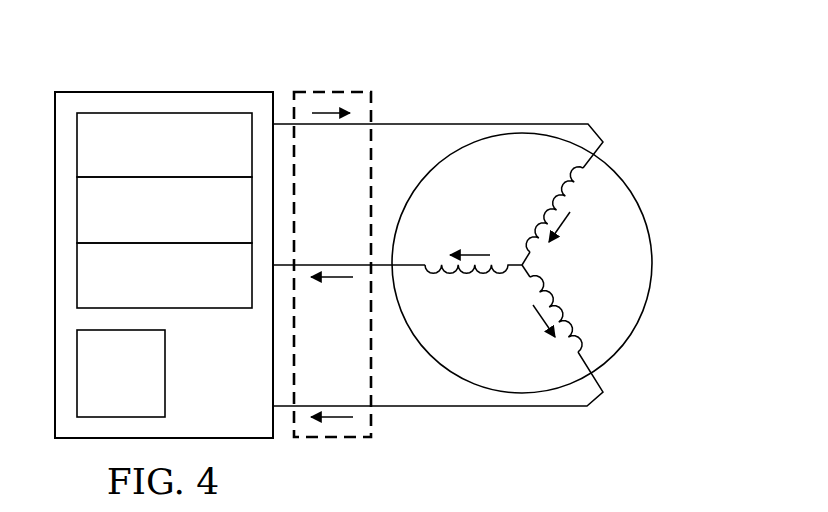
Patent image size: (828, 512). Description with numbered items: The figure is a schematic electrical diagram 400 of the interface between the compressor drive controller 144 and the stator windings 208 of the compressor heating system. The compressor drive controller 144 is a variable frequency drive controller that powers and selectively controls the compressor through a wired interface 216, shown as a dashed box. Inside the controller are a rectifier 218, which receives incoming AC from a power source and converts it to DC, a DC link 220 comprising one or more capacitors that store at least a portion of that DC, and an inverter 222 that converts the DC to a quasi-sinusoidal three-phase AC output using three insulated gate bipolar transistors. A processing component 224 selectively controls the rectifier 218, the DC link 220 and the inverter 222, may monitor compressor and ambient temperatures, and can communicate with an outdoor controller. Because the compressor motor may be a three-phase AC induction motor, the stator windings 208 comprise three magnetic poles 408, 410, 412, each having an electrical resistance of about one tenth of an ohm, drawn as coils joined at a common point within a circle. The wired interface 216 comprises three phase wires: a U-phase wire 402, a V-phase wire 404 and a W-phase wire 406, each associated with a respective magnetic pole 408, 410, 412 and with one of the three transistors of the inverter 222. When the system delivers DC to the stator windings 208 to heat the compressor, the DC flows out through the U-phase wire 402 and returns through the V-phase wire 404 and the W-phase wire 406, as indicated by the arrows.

The schematic electrical diagram 400 is at (490, 70).
The compressor drive controller 144 is at (140, 90).
The rectifier 218 is at (141, 162).
The DC link 220 is at (141, 227).
The inverter 222 is at (141, 292).
The processing component 224 is at (98, 388).
The wired interface 216 is at (331, 90).
The U-phase wire 402 is at (325, 126).
The V-phase wire 404 is at (325, 263).
The W-phase wire 406 is at (325, 404).
The stator windings 208 is at (632, 342).
The magnetic pole 408 is at (600, 162).
The magnetic pole 410 is at (422, 262).
The magnetic pole 412 is at (577, 357).